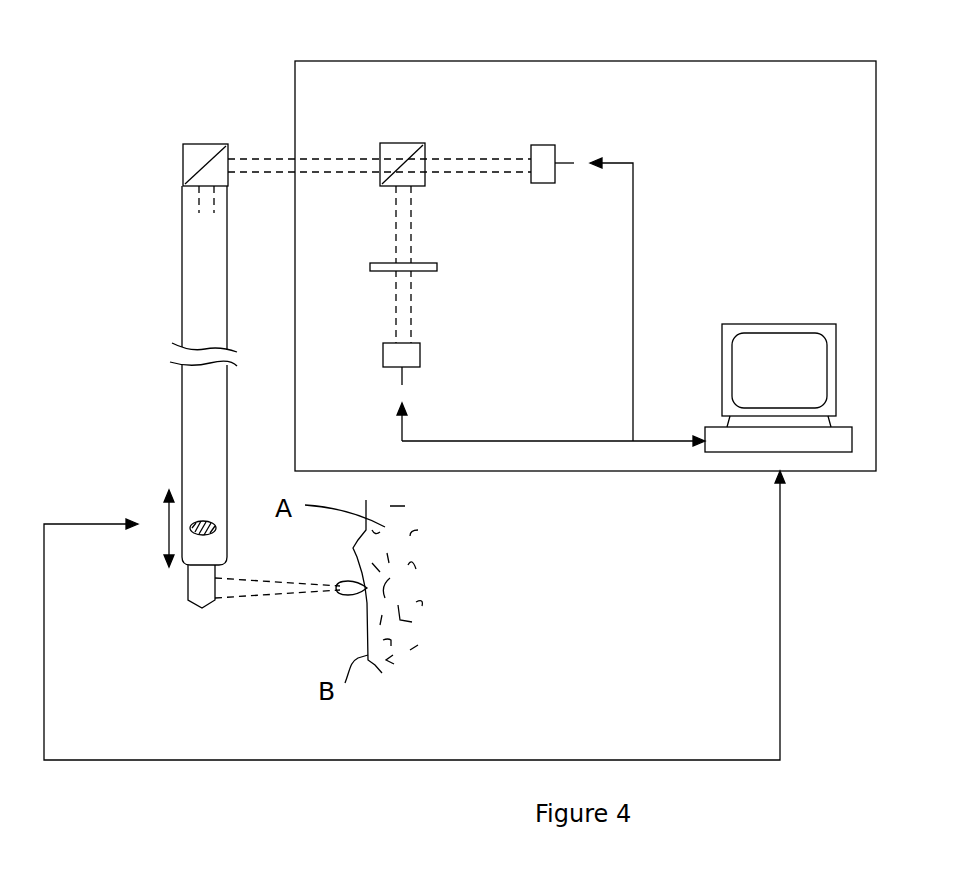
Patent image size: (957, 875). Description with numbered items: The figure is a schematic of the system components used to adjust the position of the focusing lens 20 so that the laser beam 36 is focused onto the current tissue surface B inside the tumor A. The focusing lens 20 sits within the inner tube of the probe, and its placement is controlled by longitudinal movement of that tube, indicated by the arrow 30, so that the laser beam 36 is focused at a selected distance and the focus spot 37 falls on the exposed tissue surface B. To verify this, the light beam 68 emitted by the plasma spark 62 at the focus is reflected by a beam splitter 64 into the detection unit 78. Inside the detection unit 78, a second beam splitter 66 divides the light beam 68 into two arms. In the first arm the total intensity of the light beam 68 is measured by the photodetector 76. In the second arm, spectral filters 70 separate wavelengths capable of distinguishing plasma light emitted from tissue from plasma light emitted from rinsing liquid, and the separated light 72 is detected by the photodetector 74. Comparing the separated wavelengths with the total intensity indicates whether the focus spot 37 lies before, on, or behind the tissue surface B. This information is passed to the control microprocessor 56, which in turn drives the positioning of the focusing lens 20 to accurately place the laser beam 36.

The focusing lens 20 is at (197, 523).
The arrow 30 is at (158, 529).
The laser beam 36 is at (265, 595).
The focus spot 37 is at (380, 590).
The control microprocessor 56 is at (717, 445).
The plasma spark 62 is at (348, 598).
The beam splitter 64 is at (183, 160).
The second beam splitter 66 is at (400, 150).
The light beam 68 is at (198, 205).
The spectral filters 70 is at (377, 263).
The reflected beam 72 is at (408, 302).
The photodetector 74 is at (420, 355).
The photodetector 76 is at (540, 184).
The detection unit 78 is at (585, 266).